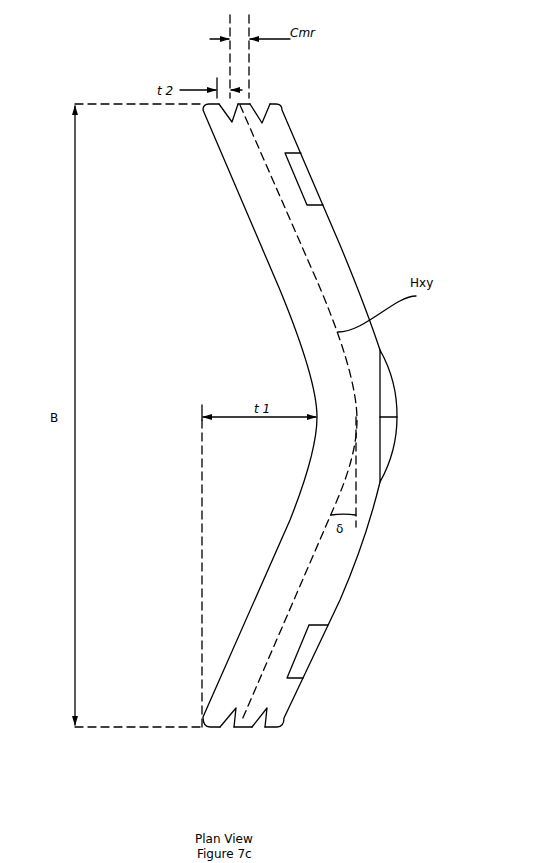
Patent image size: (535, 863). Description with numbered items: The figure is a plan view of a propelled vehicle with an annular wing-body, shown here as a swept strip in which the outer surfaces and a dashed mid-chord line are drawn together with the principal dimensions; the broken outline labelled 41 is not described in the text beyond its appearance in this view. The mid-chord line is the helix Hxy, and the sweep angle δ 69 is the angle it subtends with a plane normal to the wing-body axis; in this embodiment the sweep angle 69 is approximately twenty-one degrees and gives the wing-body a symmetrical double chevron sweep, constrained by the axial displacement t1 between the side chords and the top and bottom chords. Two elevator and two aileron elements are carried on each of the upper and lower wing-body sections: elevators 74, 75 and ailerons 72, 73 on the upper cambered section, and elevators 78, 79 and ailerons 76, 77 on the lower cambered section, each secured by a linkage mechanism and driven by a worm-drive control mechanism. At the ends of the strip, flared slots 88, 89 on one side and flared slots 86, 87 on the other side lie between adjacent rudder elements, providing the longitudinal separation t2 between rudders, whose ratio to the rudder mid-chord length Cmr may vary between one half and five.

The wiper blade 41 is at (75, 340).
The flared slot 88 is at (221, 111).
The flared slot 89 is at (257, 107).
The flared slot 86 is at (224, 725).
The flared slot 87 is at (255, 725).
The aileron 72 is at (334, 179).
The aileron 76 is at (310, 187).
The aileron 73 is at (335, 652).
The aileron 77 is at (313, 640).
The elevator 74 is at (431, 381).
The elevator 78 is at (385, 402).
The elevator 75 is at (429, 449).
The elevator 79 is at (387, 428).
The sweep angle 69 is at (341, 537).